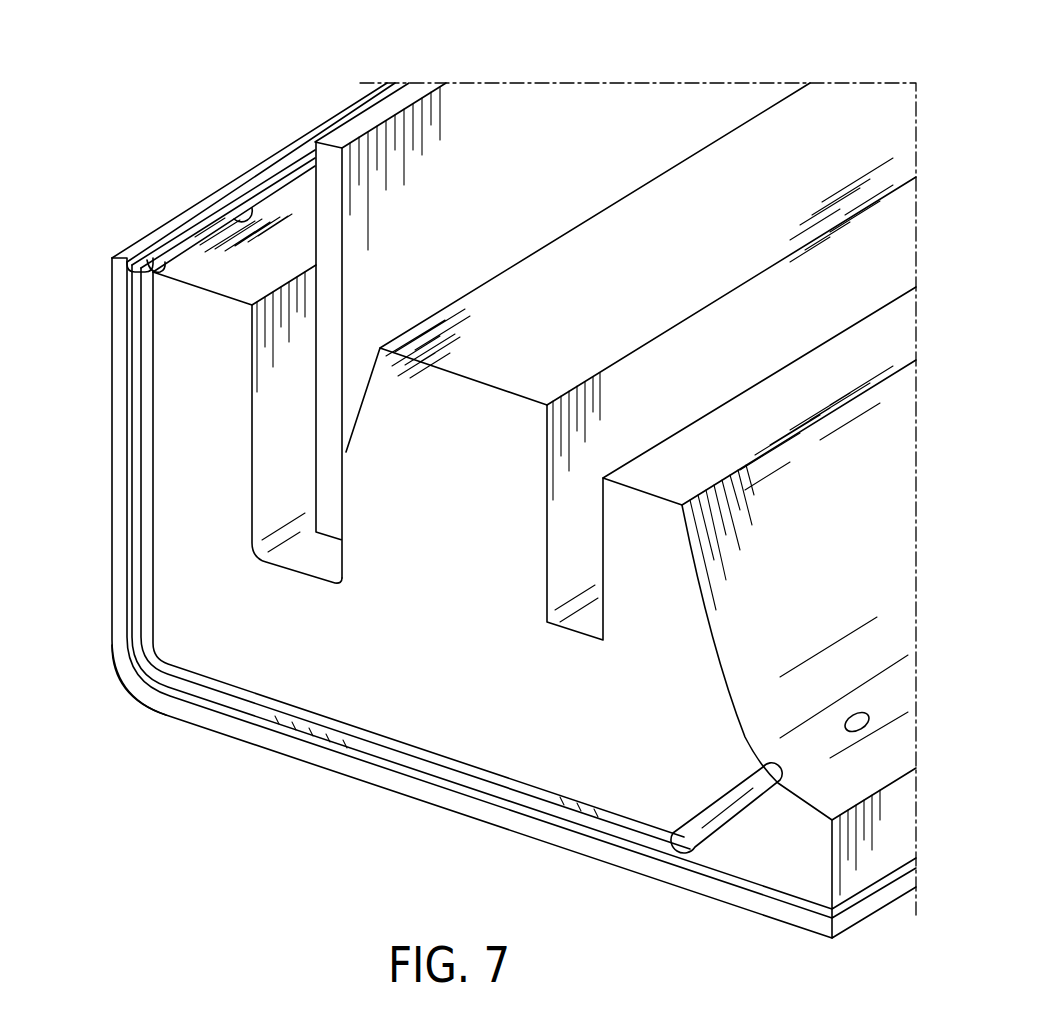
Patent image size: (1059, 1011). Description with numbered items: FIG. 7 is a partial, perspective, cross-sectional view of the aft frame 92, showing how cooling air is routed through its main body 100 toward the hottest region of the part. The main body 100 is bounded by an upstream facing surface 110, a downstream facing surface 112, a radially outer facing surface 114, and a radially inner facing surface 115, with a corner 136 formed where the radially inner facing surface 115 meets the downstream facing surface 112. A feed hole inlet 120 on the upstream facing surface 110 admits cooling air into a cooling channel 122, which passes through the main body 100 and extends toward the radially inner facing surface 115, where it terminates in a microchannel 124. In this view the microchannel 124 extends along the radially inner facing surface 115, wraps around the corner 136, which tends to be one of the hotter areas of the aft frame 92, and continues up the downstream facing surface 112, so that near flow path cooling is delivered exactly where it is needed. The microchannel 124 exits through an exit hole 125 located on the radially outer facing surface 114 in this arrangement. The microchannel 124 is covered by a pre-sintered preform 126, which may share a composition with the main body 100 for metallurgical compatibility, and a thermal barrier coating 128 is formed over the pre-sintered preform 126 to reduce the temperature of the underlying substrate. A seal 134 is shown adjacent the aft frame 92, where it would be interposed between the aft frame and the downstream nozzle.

The aft frame 92 is at (858, 74).
The main body 100 is at (475, 523).
The upstream facing surface 110 is at (838, 578).
The downstream facing surface 112 is at (100, 228).
The radially outer facing surface 114 is at (292, 200).
The radially inner facing surface 115 is at (325, 796).
The feed hole inlet 120 is at (846, 724).
The cooling channel 122 is at (710, 810).
The microchannel 124 is at (156, 424).
The exit hole 125 is at (240, 216).
The pre-sintered preform 126 is at (140, 570).
The thermal barrier coating 128 is at (108, 360).
The seal 134 is at (441, 230).
The corner 136 is at (100, 688).